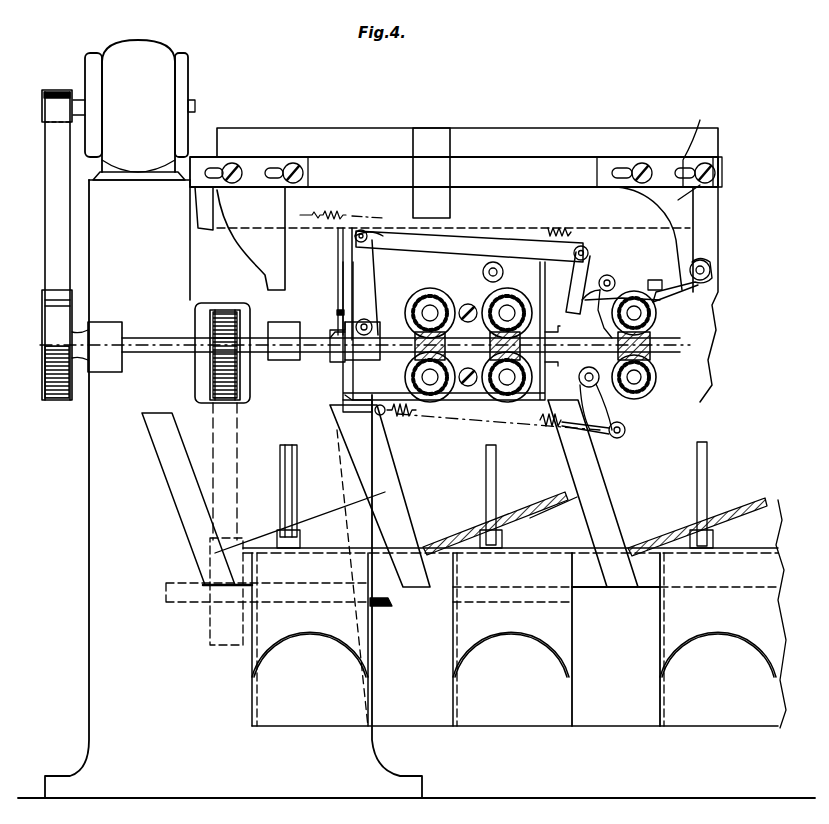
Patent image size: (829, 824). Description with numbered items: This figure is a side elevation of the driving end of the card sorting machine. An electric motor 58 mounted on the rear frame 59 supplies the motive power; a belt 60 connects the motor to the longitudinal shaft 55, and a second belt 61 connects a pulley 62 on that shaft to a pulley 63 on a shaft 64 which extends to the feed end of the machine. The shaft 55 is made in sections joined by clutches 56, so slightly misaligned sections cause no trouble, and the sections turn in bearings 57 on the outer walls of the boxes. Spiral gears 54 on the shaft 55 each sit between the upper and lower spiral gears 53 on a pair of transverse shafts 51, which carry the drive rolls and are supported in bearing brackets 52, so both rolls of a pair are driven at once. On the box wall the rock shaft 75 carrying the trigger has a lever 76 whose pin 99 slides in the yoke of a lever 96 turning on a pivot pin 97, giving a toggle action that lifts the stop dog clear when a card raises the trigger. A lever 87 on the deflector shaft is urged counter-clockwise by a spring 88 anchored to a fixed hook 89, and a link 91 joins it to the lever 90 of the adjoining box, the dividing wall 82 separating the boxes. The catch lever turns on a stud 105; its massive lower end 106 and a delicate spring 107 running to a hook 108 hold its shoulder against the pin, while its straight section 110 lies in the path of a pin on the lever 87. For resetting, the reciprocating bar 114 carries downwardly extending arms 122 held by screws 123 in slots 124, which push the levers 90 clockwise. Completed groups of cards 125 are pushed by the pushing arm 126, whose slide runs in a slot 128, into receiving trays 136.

The shaft 51 is at (641, 377).
The bearing bracket 52 is at (480, 290).
The spiral gear 53 is at (635, 410).
The spiral gear 54 is at (658, 330).
The longitudinal shaft 55 is at (162, 355).
The clutch 56 is at (540, 362).
The bearing 57 is at (463, 344).
The electric motor 58 is at (160, 92).
The rear frame 59 is at (113, 465).
The belt 60 is at (57, 217).
The second belt 61 is at (216, 400).
The pulley 62 is at (250, 368).
The pulley 63 is at (212, 634).
The shaft 64 is at (375, 606).
The rock shaft 75 is at (483, 272).
The lever 76 is at (704, 262).
The dividing wall 82 is at (540, 272).
The lever 87 is at (588, 243).
The spring 88 is at (383, 218).
The fixed hook 89 is at (323, 204).
The lever 90 is at (370, 277).
The link 91 is at (522, 252).
The lever 96 is at (630, 282).
The pivot pin 97 is at (610, 280).
The pin 99 is at (648, 285).
The stud 105 is at (638, 433).
The lower end of catch lever 106 is at (625, 436).
The spring 107 is at (440, 418).
The hook 108 is at (384, 416).
The straight section 110 is at (553, 300).
The reciprocating bar 114 is at (454, 265).
The arm 122 is at (720, 176).
The screw 123 is at (720, 166).
The slot 124 is at (706, 153).
The group of cards 125 is at (455, 530).
The pushing arm 126 is at (490, 452).
The slot 128 is at (595, 524).
The receiving tray 136 is at (335, 628).